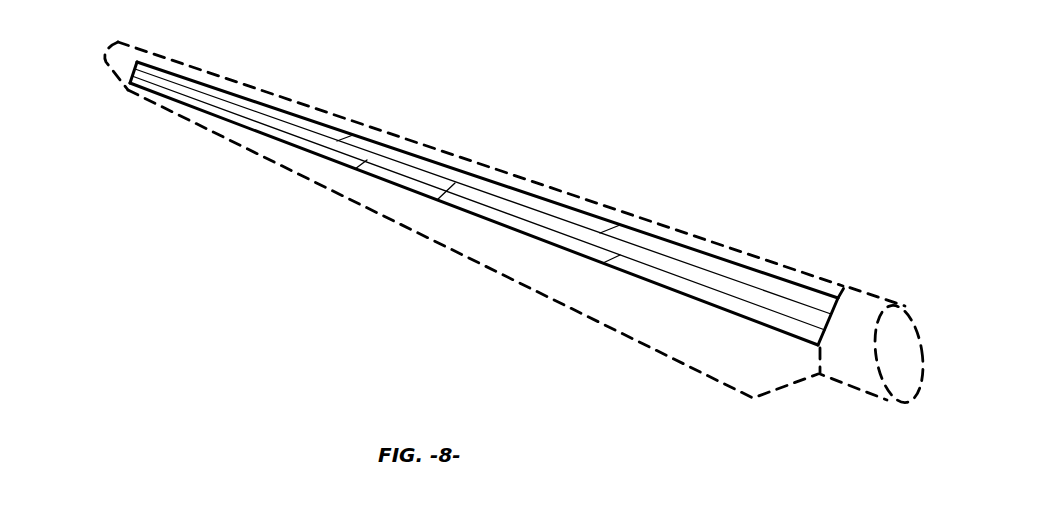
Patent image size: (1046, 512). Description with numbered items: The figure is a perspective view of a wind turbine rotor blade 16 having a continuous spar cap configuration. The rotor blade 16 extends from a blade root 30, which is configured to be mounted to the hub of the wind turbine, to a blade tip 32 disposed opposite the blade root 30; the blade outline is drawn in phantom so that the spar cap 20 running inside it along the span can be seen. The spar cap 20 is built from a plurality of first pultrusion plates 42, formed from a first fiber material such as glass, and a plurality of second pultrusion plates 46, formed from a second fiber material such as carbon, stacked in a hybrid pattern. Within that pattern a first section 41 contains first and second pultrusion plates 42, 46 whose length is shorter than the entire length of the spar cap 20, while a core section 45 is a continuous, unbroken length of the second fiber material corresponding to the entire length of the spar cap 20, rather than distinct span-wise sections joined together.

The rotor blade 16 is at (645, 165).
The blade tip 32 is at (110, 45).
The blade root 30 is at (846, 384).
The spar cap 20 is at (507, 184).
The first section 41 is at (393, 161).
The core section 45 is at (733, 298).
The second pultrusion plates 46 is at (259, 98).
The first pultrusion plates 42 is at (437, 201).